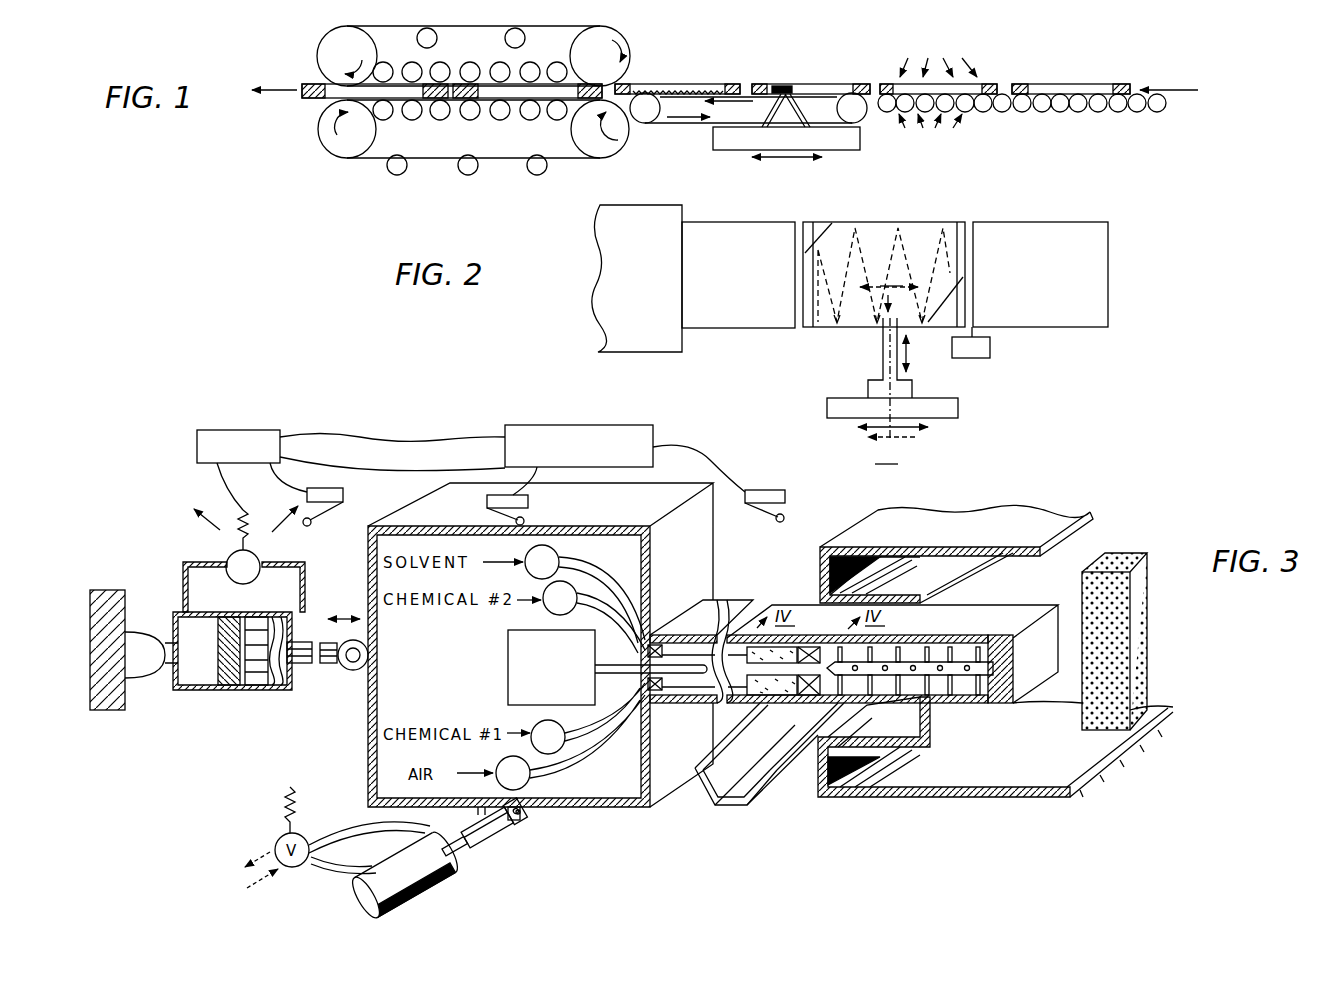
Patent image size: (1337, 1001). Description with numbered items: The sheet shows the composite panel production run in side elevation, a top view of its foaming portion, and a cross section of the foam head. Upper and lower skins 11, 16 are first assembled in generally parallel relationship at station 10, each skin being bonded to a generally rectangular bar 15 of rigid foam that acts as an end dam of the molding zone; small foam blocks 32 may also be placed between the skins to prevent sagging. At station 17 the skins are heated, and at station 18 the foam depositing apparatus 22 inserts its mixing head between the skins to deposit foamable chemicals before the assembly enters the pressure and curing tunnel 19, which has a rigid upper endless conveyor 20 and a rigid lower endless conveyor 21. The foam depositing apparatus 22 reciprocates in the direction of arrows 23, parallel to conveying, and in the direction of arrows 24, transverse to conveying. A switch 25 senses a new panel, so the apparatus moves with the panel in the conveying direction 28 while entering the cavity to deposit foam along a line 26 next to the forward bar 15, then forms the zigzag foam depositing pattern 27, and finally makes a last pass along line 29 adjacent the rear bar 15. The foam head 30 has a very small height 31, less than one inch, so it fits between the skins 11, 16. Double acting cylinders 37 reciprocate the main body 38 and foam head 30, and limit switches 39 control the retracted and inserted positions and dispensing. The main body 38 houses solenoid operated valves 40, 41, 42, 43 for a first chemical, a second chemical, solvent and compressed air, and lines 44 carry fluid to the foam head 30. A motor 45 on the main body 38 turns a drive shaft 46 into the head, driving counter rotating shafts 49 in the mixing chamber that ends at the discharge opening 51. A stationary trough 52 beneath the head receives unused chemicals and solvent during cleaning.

In FIG. 1, the station 10 is at (1083, 80).
In FIG. 2, the upper rigid skin 11 is at (716, 316).
In FIG. 3, the upper rigid skin 11 is at (923, 531).
In FIG. 2, the bar 15 is at (808, 288).
In FIG. 2, the lower skin 16 is at (920, 233).
In FIG. 3, the lower skin 16 is at (953, 774).
In FIG. 1, the station 17 is at (986, 75).
In FIG. 1, the station 18 is at (763, 78).
In FIG. 1, the pressure and curing tunnel 19 is at (447, 160).
In FIG. 1, the upper endless conveyor 20 is at (318, 54).
In FIG. 2, the upper endless conveyor 20 is at (638, 279).
In FIG. 1, the lower endless conveyor 21 is at (318, 136).
In FIG. 1, the foam depositing apparatus 22 is at (860, 140).
In FIG. 2, the foam depositing apparatus 22 is at (958, 412).
In FIG. 3, the foam depositing apparatus 22 is at (628, 813).
In FIG. 1, the arrows 23 is at (795, 160).
In FIG. 2, the arrows 23 is at (915, 437).
In FIG. 2, the arrows 24 is at (910, 360).
In FIG. 2, the switch 25 is at (990, 348).
In FIG. 2, the line 26 is at (818, 320).
In FIG. 2, the zigzag foam depositing pattern 27 is at (880, 214).
In FIG. 2, the conveying direction 28 is at (699, 273).
In FIG. 2, the line 29 is at (956, 226).
In FIG. 3, the foam head 30 is at (712, 632).
In FIG. 3, the height 31 is at (1033, 688).
In FIG. 3, the foam blocks 32 is at (1140, 644).
In FIG. 3, the cylinder 37 is at (220, 692).
In FIG. 3, the main body 38 is at (694, 564).
In FIG. 3, the limit switches 39 is at (343, 496).
In FIG. 3, the solenoid operated valve 40 is at (543, 722).
In FIG. 3, the solenoid operated valve 41 is at (551, 611).
In FIG. 3, the solenoid operated valve 42 is at (528, 553).
In FIG. 3, the solenoid operated valve 43 is at (527, 786).
In FIG. 3, the lines 44 is at (617, 583).
In FIG. 3, the motor 45 is at (512, 660).
In FIG. 3, the drive shaft 46 is at (780, 668).
In FIG. 3, the counter rotating shafts 49 is at (1027, 633).
In FIG. 3, the discharge opening 51 is at (982, 704).
In FIG. 3, the stationary trough 52 is at (753, 778).